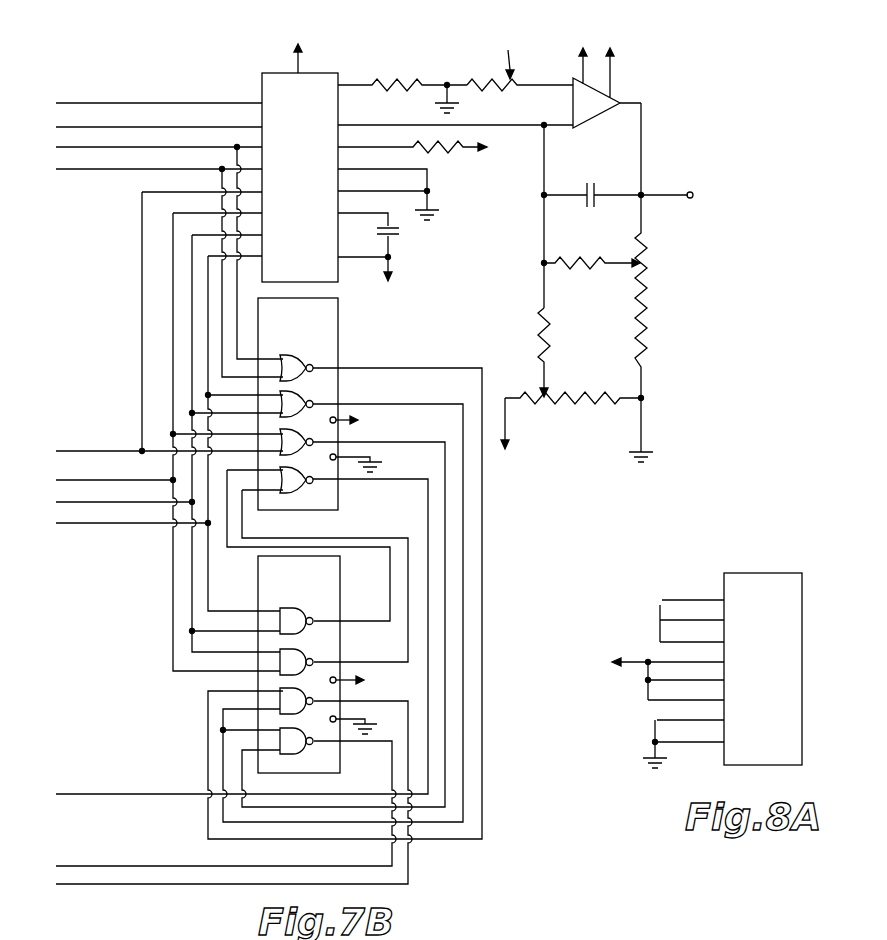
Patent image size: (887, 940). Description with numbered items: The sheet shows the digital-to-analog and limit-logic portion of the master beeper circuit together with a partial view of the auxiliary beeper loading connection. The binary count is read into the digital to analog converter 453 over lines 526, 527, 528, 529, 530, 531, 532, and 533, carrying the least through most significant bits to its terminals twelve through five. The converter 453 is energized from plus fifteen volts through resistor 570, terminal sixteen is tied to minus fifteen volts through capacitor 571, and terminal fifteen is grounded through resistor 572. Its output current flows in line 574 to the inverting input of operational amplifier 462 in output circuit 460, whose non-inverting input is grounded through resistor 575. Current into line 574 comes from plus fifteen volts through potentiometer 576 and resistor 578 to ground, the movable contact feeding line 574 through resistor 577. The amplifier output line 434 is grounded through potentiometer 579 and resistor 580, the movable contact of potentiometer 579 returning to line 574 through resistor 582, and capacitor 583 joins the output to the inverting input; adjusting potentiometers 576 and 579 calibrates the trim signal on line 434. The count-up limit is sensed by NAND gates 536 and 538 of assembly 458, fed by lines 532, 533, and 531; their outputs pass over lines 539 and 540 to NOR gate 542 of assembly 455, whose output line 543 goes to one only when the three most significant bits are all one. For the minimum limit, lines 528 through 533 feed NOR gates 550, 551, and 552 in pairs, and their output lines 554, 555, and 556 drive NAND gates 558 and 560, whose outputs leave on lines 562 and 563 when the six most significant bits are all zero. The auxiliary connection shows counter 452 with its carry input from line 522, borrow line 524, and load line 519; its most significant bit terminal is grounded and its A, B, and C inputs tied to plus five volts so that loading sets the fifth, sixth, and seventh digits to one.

In FIG. 7B, the digital to analog converter 453 is at (278, 73).
In FIG. 7B, the quadruple two-input positive NOR gate assembly 455 is at (328, 300).
In FIG. 7B, the quadruple two-input positive NAND gate assembly 458 is at (264, 590).
In FIG. 7B, the output circuit 460 is at (490, 55).
In FIG. 7B, the operational amplifier 462 is at (590, 112).
In FIG. 7B, the output line 434 is at (691, 191).
In FIG. 8A, the counter 452 is at (750, 573).
In FIG. 8A, the load line 519 is at (662, 642).
In FIG. 8A, the carry line 522 is at (670, 600).
In FIG. 8A, the borrow line 524 is at (660, 620).
In FIG. 7B, the least significant bit line 526 is at (137, 103).
In FIG. 7B, the second bit line 527 is at (78, 127).
In FIG. 7B, the third bit line 528 is at (100, 147).
In FIG. 7B, the fourth bit line 529 is at (122, 169).
In FIG. 7B, the fifth bit line 530 is at (118, 450).
In FIG. 7B, the sixth bit line 531 is at (100, 480).
In FIG. 7B, the seventh bit line 532 is at (128, 502).
In FIG. 7B, the most significant bit line 533 is at (155, 523).
In FIG. 7B, the NAND gate 536 is at (318, 620).
In FIG. 7B, the NAND gate 538 is at (318, 660).
In FIG. 7B, the line 539 is at (255, 547).
In FIG. 7B, the line 540 is at (345, 538).
In FIG. 7B, the NOR gate 542 is at (305, 487).
In FIG. 7B, the output line 543 is at (428, 555).
In FIG. 7B, the NOR gate 550 is at (300, 362).
In FIG. 7B, the NOR gate 551 is at (300, 405).
In FIG. 7B, the NOR gate 552 is at (315, 443).
In FIG. 7B, the output line 554 is at (482, 595).
In FIG. 7B, the output line 555 is at (463, 643).
In FIG. 7B, the output line 556 is at (445, 688).
In FIG. 7B, the NAND gate 558 is at (267, 690).
In FIG. 7B, the NAND gate 560 is at (290, 750).
In FIG. 7B, the line 562 is at (67, 884).
In FIG. 7B, the line 563 is at (124, 866).
In FIG. 7B, the resistor 570 is at (440, 147).
In FIG. 7B, the capacitor 571 is at (395, 233).
In FIG. 7B, the resistor 572 is at (376, 84).
In FIG. 7B, the converter output line 574 is at (378, 100).
In FIG. 7B, the resistor 575 is at (472, 86).
In FIG. 7B, the potentiometer 576 is at (523, 396).
In FIG. 7B, the resistor 577 is at (550, 330).
In FIG. 7B, the resistor 578 is at (590, 400).
In FIG. 7B, the potentiometer 579 is at (646, 265).
In FIG. 7B, the resistor 580 is at (650, 342).
In FIG. 7B, the resistor 582 is at (568, 268).
In FIG. 7B, the capacitor 583 is at (588, 200).